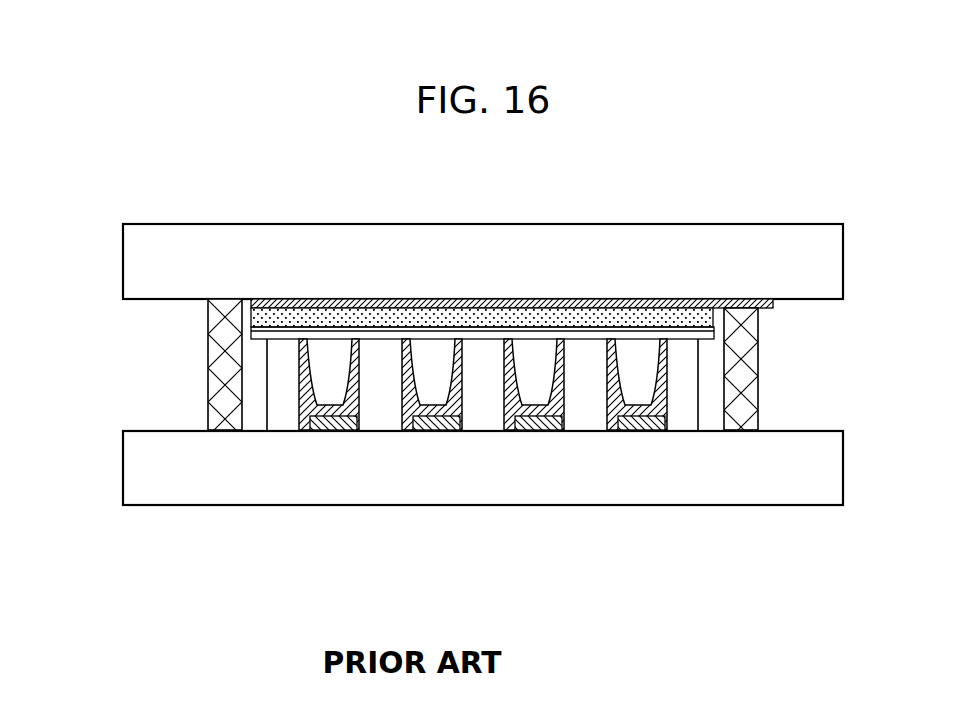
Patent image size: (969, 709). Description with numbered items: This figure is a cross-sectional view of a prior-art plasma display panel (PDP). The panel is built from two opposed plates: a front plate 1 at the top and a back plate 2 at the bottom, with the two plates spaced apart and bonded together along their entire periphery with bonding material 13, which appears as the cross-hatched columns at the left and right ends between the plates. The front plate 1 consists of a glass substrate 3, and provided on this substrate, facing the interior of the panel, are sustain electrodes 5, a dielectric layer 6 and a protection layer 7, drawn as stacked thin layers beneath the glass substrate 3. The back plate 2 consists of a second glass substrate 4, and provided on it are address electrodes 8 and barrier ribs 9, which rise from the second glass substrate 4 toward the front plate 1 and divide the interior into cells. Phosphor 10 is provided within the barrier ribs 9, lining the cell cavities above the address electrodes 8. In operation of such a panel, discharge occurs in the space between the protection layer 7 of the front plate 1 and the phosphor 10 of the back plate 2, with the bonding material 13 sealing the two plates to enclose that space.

The front plate 1 is at (855, 218).
The back plate 2 is at (855, 338).
The glass substrate 3 is at (220, 247).
The second glass substrate 4 is at (172, 462).
The sustain electrodes 5 is at (737, 302).
The dielectric layer 6 is at (252, 315).
The protection layer 7 is at (262, 333).
The address electrodes 8 is at (335, 433).
The barrier ribs 9 is at (682, 415).
The phosphor 10 is at (605, 395).
The bonding material 13 is at (758, 420).